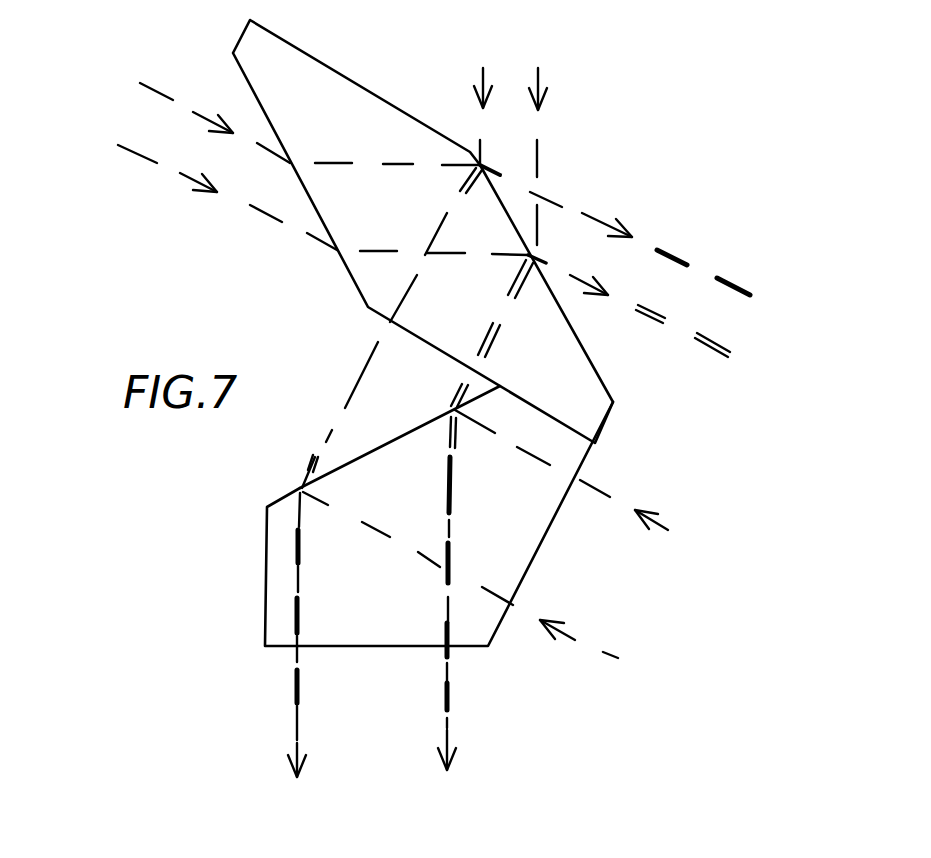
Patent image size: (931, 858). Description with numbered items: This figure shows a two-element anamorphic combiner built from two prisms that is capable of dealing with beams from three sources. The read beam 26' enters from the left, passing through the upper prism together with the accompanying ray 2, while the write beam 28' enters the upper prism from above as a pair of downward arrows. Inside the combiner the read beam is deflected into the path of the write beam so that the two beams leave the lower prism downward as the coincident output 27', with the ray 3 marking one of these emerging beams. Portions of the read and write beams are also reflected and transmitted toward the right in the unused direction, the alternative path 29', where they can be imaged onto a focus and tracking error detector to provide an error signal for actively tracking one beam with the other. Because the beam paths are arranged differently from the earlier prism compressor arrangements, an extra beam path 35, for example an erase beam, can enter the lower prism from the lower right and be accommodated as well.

The read beam 26' is at (174, 116).
The second input ray 2 is at (78, 128).
The write beam 28' is at (511, 62).
The alternative path 29' is at (671, 277).
The extra beam path 35 is at (687, 532).
The deflected read beam 27' is at (358, 664).
The output ray 3 is at (462, 614).